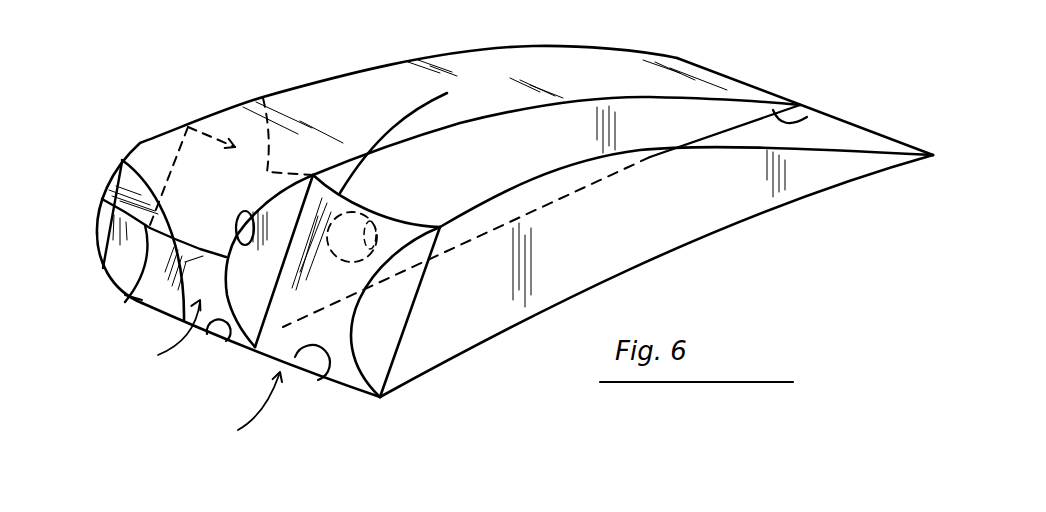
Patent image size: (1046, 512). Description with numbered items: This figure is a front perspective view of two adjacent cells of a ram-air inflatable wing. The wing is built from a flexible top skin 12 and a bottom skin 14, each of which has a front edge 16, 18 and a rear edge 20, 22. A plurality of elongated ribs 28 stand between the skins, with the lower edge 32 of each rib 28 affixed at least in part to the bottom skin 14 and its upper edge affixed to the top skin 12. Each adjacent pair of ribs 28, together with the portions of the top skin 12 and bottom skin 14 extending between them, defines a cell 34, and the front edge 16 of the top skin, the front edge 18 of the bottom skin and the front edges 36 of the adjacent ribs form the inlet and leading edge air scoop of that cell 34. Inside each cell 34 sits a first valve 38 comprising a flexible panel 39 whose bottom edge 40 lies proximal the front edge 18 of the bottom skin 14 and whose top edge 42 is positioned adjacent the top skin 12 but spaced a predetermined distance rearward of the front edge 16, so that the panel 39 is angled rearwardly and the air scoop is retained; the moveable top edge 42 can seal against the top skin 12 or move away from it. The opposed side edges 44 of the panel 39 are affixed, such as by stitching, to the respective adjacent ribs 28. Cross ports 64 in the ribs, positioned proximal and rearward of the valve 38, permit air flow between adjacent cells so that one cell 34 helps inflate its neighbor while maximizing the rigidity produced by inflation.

The top skin 12 is at (387, 94).
The bottom skin 14 is at (683, 247).
The front edge of the top skin 16 is at (110, 263).
The front edge of the bottom skin 18 is at (350, 385).
The rear edge of the top skin 20 is at (727, 82).
The rear edge of the bottom skin 22 is at (857, 133).
The rib 28 is at (563, 163).
The lower edge of the rib 32 is at (807, 117).
The cell 34 is at (199, 374).
The front edge of the rib 36 is at (249, 213).
The first valve 38 is at (188, 127).
The panel 39 is at (131, 169).
The bottom edge of the panel 40 is at (222, 340).
The top edge of the panel 42 is at (263, 98).
The side edges of the panel 44 is at (141, 310).
The cross port 64 is at (383, 189).